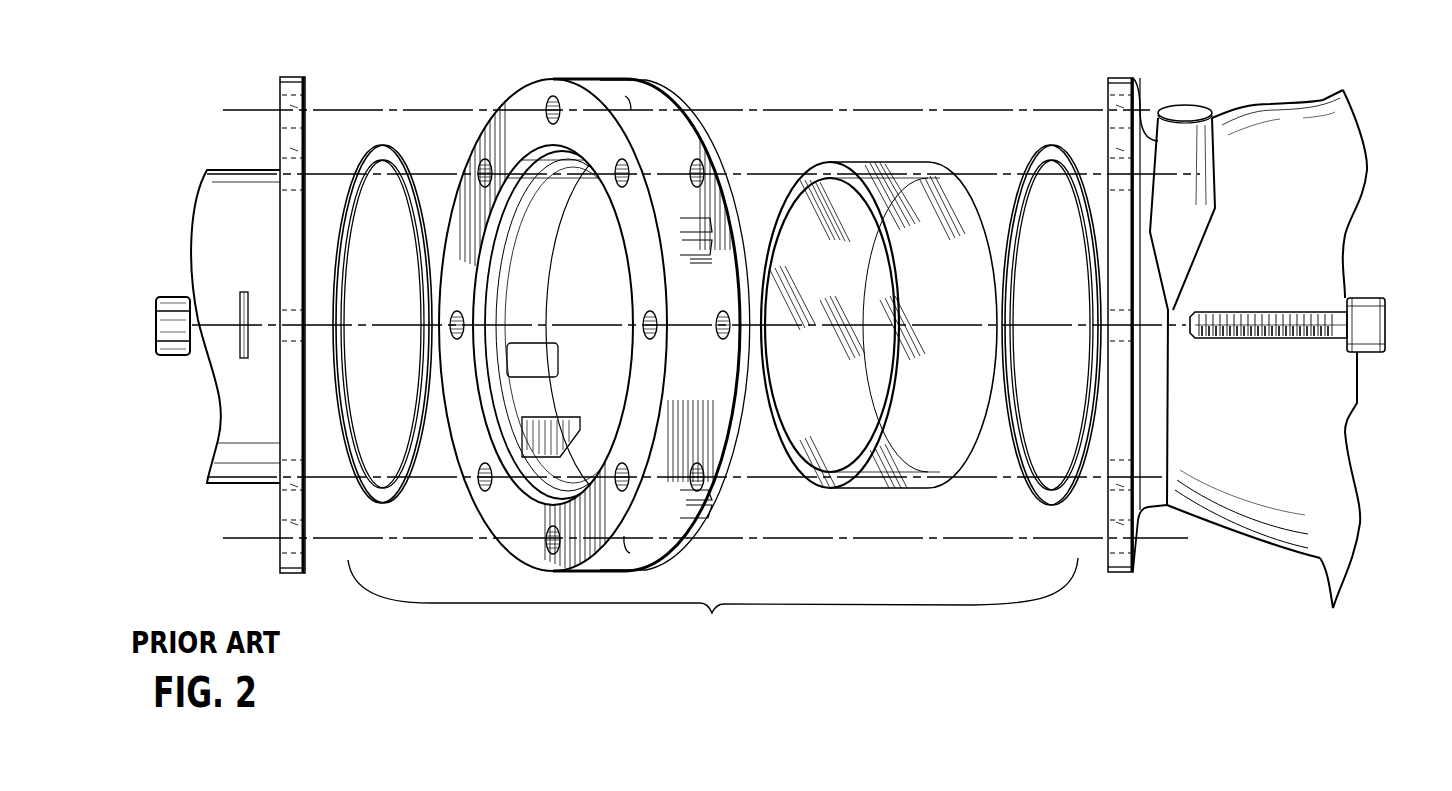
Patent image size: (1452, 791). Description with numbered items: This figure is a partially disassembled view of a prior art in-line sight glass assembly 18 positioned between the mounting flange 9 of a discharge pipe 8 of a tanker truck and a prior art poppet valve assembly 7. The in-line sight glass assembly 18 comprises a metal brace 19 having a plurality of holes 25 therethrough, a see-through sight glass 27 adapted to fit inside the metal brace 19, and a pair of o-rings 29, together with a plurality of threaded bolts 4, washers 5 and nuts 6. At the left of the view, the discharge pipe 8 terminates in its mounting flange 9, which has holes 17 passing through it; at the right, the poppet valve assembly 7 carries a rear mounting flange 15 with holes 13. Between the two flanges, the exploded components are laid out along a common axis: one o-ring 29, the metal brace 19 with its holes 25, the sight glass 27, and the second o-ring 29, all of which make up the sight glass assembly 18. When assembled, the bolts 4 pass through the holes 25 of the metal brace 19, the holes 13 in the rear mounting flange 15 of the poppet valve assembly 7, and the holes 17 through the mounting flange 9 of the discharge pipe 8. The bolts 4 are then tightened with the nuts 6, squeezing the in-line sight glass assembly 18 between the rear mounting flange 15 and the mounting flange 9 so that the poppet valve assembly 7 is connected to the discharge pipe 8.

The threaded bolt 4 is at (1388, 326).
The washer 5 is at (242, 292).
The nut 6 is at (160, 298).
The poppet valve assembly 7 is at (1278, 438).
The discharge pipe 8 is at (243, 418).
The mounting flange 9 is at (292, 77).
The holes 13 is at (1108, 152).
The rear mounting flange 15 is at (1120, 78).
The holes 17 is at (305, 152).
The in-line sight glass assembly 18 is at (713, 603).
The metal brace 19 is at (690, 92).
The holes 25 is at (481, 162).
The sight glass 27 is at (866, 492).
The o-rings 29 is at (392, 153).